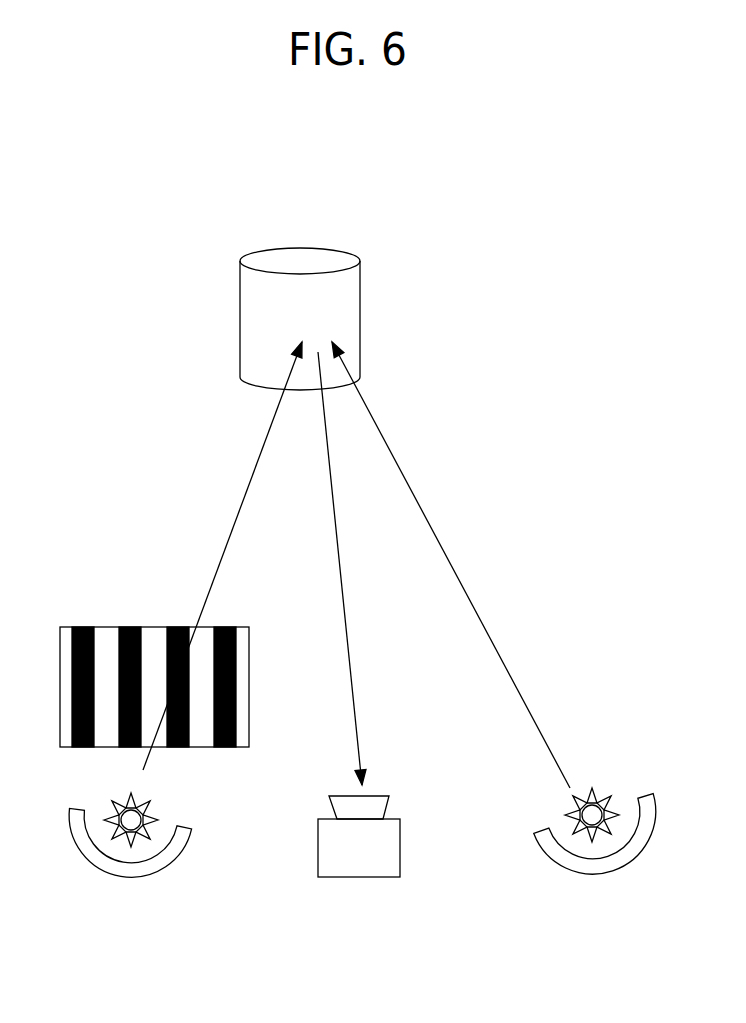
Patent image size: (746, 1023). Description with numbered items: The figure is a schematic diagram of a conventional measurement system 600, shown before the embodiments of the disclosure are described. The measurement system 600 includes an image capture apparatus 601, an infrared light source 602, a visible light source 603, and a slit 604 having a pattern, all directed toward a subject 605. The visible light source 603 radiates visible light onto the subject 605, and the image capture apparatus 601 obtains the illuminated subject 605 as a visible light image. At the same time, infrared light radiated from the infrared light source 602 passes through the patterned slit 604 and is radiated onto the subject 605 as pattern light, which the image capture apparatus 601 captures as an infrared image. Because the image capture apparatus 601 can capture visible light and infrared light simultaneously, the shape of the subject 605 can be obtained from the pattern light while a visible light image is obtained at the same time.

The measurement system 600 is at (105, 360).
The image capture apparatus 601 is at (358, 877).
The infrared light source 602 is at (105, 873).
The visible light source 603 is at (597, 875).
The slit 604 is at (145, 627).
The subject 605 is at (360, 310).